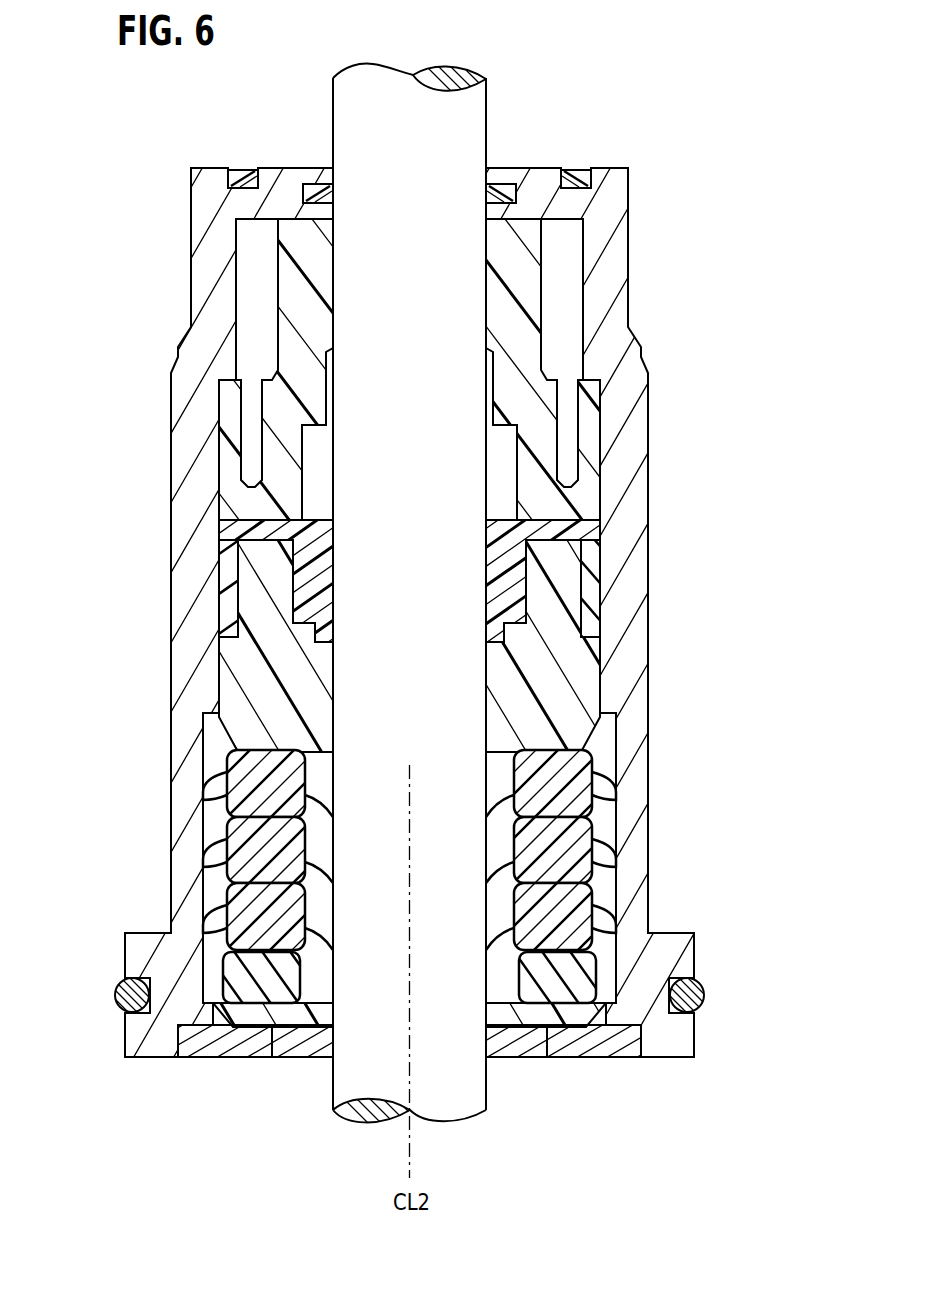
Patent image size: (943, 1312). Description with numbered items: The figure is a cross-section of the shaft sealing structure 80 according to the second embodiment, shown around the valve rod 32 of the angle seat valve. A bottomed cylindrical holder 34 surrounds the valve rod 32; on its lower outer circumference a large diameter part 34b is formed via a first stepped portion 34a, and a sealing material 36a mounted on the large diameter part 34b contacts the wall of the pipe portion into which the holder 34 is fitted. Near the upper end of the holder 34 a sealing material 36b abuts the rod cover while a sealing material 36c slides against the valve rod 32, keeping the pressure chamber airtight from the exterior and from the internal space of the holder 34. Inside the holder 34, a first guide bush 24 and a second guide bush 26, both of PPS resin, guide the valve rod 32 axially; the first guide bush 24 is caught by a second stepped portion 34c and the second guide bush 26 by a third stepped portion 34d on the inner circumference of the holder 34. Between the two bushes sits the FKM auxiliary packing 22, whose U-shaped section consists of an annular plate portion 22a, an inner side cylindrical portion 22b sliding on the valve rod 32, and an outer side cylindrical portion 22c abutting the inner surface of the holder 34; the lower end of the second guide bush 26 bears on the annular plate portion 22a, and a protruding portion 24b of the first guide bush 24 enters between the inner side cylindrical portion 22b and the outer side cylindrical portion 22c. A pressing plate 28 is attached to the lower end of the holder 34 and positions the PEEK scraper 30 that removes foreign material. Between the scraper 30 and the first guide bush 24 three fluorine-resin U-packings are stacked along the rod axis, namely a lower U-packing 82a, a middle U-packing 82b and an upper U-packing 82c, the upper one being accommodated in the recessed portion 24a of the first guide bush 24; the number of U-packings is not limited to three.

The shaft sealing structure 80 is at (634, 54).
The valve rod 32 is at (475, 112).
The holder 34 is at (645, 307).
The first stepped portion 34a is at (143, 933).
The large diameter part 34b is at (138, 959).
The second stepped portion 34c is at (603, 692).
The third stepped portion 34d is at (603, 398).
The sealing material 36a is at (118, 996).
The sealing material 36b is at (237, 172).
The sealing material 36c is at (317, 192).
The second guide bush 26 is at (290, 280).
The auxiliary packing 22 is at (477, 545).
The annular plate portion 22a is at (557, 518).
The inner side cylindrical portion 22b is at (507, 592).
The outer side cylindrical portion 22c is at (590, 565).
The first guide bush 24 is at (265, 660).
The recessed portion 24a is at (223, 780).
The protruding portion 24b is at (245, 572).
The lower U-packing 82a is at (555, 915).
The middle U-packing 82b is at (555, 850).
The upper U-packing 82c is at (555, 775).
The pressing plate 28 is at (230, 1050).
The scraper 30 is at (277, 977).